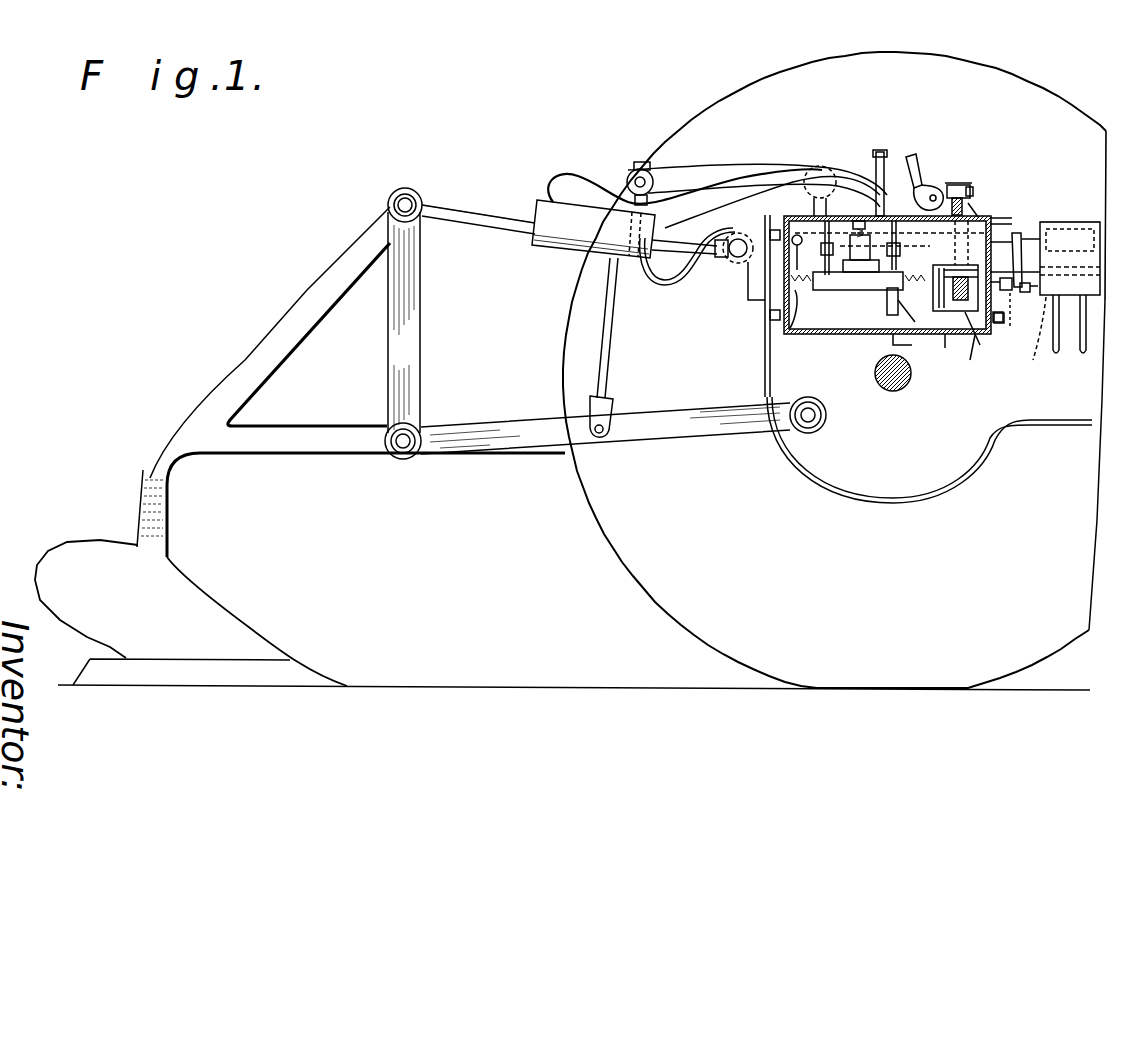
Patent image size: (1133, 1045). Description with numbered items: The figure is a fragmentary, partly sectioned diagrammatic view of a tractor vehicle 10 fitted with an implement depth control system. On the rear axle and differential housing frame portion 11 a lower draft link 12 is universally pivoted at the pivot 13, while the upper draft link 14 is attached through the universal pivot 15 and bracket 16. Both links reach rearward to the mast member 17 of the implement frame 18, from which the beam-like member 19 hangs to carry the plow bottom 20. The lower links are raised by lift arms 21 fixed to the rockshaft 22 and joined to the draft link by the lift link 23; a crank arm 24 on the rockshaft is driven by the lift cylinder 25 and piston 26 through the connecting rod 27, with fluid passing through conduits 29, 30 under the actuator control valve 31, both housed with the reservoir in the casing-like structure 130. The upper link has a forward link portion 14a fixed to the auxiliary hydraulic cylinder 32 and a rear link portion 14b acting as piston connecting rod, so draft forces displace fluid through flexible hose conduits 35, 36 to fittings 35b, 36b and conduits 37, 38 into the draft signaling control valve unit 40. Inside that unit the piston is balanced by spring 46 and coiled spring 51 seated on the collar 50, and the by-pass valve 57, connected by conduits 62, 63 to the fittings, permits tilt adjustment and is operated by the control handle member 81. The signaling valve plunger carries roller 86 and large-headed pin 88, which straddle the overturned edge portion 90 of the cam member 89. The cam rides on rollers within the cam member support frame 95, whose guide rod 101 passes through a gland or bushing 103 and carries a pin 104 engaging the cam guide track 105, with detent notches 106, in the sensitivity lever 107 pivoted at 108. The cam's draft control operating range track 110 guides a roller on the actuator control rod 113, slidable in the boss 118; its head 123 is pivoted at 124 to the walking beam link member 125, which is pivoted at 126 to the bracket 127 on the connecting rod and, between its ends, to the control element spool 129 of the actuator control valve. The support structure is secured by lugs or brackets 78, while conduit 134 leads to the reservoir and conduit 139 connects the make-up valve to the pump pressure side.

The tractor vehicle 10 is at (1047, 158).
The rear axle and differential housing frame portion 11 is at (762, 352).
The lower draft links 12 is at (710, 432).
The universal pivot 13 is at (815, 428).
The upper draft link 14 is at (500, 197).
The forward link portion 14a is at (688, 240).
The rear link portion 14b is at (443, 212).
The universal pivot 15 is at (725, 262).
The bracket 16 is at (748, 270).
The mast member 17 is at (424, 305).
The implement frame 18 is at (328, 258).
The beam-like member 19 is at (153, 480).
The plow bottom 20 is at (222, 568).
The lift arms 21 is at (700, 178).
The rockshaft 22 is at (817, 180).
The drop or lift link 23 is at (610, 350).
The crank arm 24 is at (800, 213).
The lift cylinder 25 is at (1062, 224).
The piston 26 is at (1090, 232).
The connecting rod 27 is at (1013, 235).
The conduit 29 is at (1046, 341).
The conduit 30 is at (1074, 341).
The actuator control valve 31 is at (1031, 333).
The auxiliary hydraulic cylinder 32 is at (562, 252).
The flexible hose conduit 35 is at (667, 295).
The fitting 35b is at (801, 249).
The flexible hose conduit 36 is at (572, 178).
The fitting 36b is at (890, 231).
The conduit 37 is at (799, 261).
The conduit 38 is at (886, 245).
The draft signaling control valve unit 40 is at (894, 275).
The spring 46 is at (797, 336).
The abutment head or collar 50 is at (878, 301).
The coiled spring 51 is at (913, 265).
The by-pass valve 57 is at (858, 255).
The conduit 62 is at (838, 247).
The conduit 63 is at (885, 245).
The lugs or brackets 78 is at (983, 333).
The control handle member 81 is at (880, 160).
The roller 86 is at (886, 315).
The large-headed pin 88 is at (951, 280).
The cam member 89 is at (945, 348).
The overturned edge portion 90 is at (943, 303).
The cam member support frame 95 is at (965, 243).
The support frame mounting and guide rod 101 is at (973, 243).
The gland or bushing 103 is at (1004, 215).
The large-headed pin 104 is at (994, 172).
The cam guide track 105 is at (966, 183).
The detent notches 106 is at (986, 186).
The sensitivity lever 107 is at (921, 165).
The pivot 108 is at (948, 172).
The draft control operating range track 110 is at (979, 357).
The actuator control rod 113 is at (1003, 309).
The boss 118 is at (1005, 275).
The head 123 is at (1027, 300).
The pivot 124 is at (1019, 318).
The walking beam link member 125 is at (1015, 260).
The pivot 126 is at (1020, 242).
The bracket 127 is at (1022, 233).
The control element spool or plunger 129 is at (1070, 273).
The casing-like structure 130 is at (1074, 220).
The conduit 134 is at (912, 380).
The conduit 139 is at (890, 350).